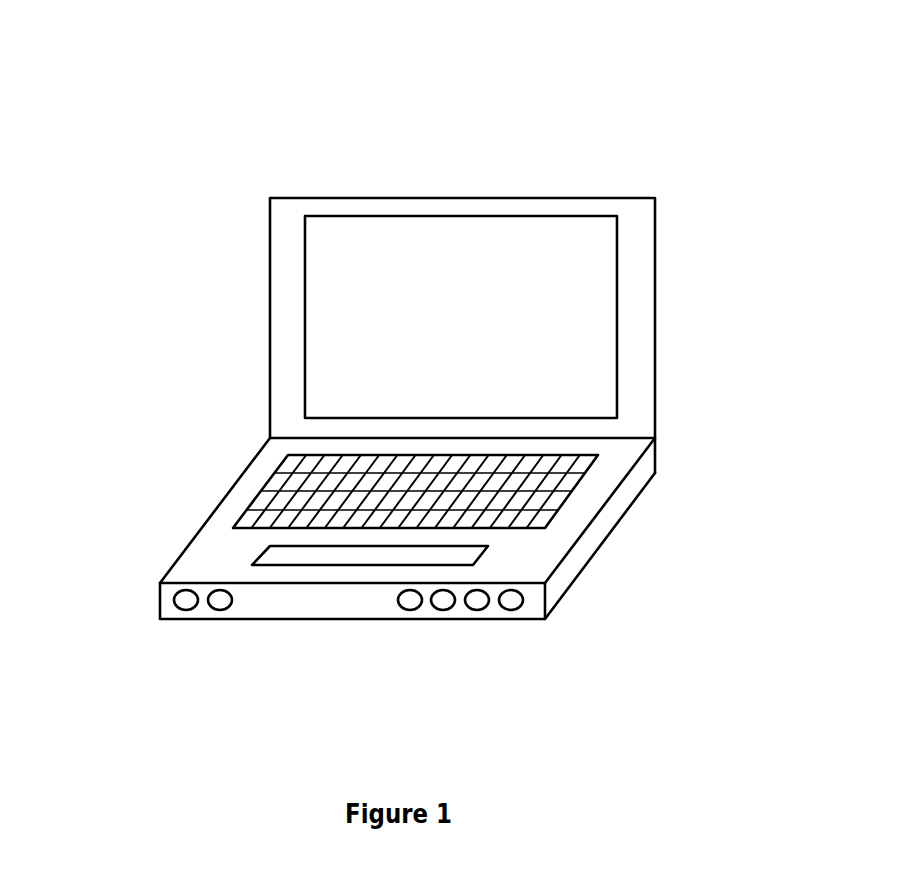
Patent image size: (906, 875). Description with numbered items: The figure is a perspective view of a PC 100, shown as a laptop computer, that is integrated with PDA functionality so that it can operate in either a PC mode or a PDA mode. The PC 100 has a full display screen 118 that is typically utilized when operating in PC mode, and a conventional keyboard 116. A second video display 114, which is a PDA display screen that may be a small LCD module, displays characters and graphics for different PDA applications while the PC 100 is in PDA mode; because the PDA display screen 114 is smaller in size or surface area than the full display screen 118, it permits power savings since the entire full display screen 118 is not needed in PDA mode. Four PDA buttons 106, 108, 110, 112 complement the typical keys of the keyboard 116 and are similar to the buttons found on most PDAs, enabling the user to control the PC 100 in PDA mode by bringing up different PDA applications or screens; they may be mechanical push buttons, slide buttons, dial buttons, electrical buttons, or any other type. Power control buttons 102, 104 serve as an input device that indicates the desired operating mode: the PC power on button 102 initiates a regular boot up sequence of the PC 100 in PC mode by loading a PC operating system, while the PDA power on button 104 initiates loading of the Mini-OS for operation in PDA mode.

The PC 100 is at (112, 104).
The PC power on button 102 is at (180, 609).
The PDA power on button 104 is at (215, 609).
The PDA button 106 is at (405, 609).
The PDA button 108 is at (443, 610).
The PDA button 110 is at (477, 610).
The PDA button 112 is at (517, 610).
The second video display 114 is at (462, 558).
The keyboard 116 is at (553, 485).
The full display screen 118 is at (595, 303).